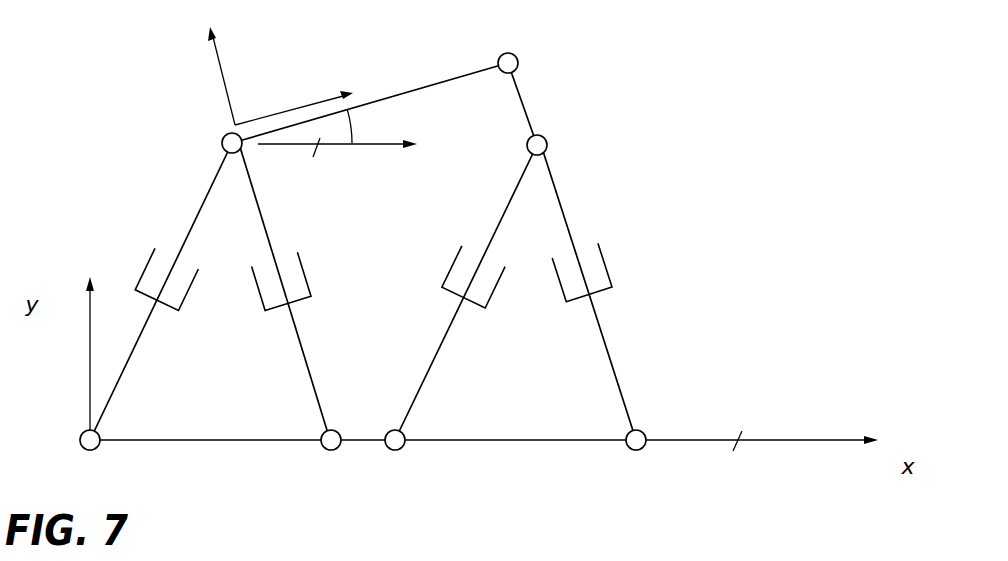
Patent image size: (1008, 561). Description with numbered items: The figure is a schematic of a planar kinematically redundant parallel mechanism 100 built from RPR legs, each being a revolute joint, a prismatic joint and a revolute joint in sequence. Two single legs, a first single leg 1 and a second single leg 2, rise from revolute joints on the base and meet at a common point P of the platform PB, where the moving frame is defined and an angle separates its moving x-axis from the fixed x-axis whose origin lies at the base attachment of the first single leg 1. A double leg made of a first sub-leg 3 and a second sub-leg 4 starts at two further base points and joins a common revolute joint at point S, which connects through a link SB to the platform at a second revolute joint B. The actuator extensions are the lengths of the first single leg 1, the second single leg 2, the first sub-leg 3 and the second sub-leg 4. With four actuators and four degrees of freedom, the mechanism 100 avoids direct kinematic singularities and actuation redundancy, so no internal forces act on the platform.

The planar kinematically redundant parallel mechanism 100 is at (733, 229).
The first single leg A1P 1 is at (144, 312).
The second single leg A2P 2 is at (290, 314).
The first sub-leg A3S 3 is at (461, 314).
The second sub-leg A4S 4 is at (603, 315).